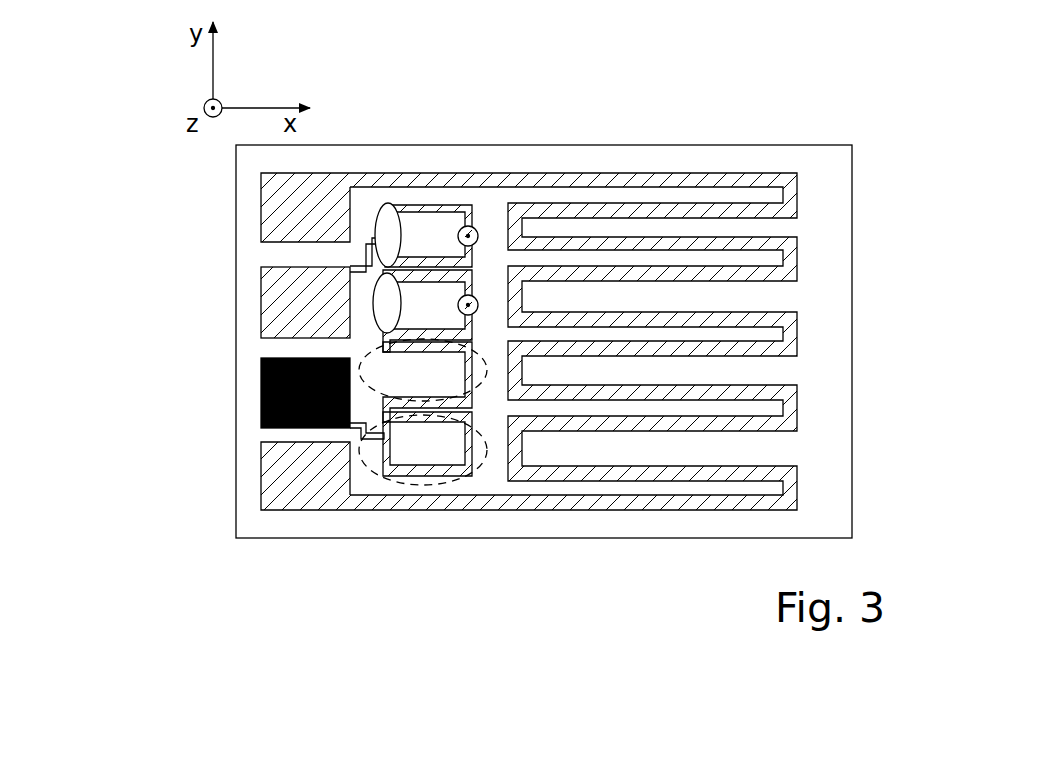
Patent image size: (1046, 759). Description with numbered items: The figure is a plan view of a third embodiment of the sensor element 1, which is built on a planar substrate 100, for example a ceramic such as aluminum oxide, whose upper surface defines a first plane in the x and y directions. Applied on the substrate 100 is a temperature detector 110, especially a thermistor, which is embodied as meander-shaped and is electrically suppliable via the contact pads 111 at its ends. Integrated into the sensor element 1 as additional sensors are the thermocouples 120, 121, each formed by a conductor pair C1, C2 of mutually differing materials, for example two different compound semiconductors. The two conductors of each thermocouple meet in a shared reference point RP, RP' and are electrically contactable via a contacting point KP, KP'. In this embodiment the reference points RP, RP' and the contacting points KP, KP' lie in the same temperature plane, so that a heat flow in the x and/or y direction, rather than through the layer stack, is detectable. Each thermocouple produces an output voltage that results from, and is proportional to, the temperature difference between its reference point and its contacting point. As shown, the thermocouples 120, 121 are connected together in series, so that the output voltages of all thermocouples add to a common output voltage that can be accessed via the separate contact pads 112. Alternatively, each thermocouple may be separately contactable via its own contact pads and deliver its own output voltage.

The sensor element 1 is at (105, 279).
The substrate 100 is at (828, 322).
The temperature detector 110 is at (740, 180).
The contact pads 111 is at (270, 210).
The contact pads 112 is at (277, 303).
The thermocouple 120 is at (422, 490).
The thermocouple 121 is at (331, 432).
The contacting point KP is at (422, 173).
The contacting point KP' is at (422, 216).
The conductor pair C1 is at (471, 224).
The reference point RP is at (516, 173).
The conductor pair C2 is at (483, 303).
The reference point RP' is at (577, 210).